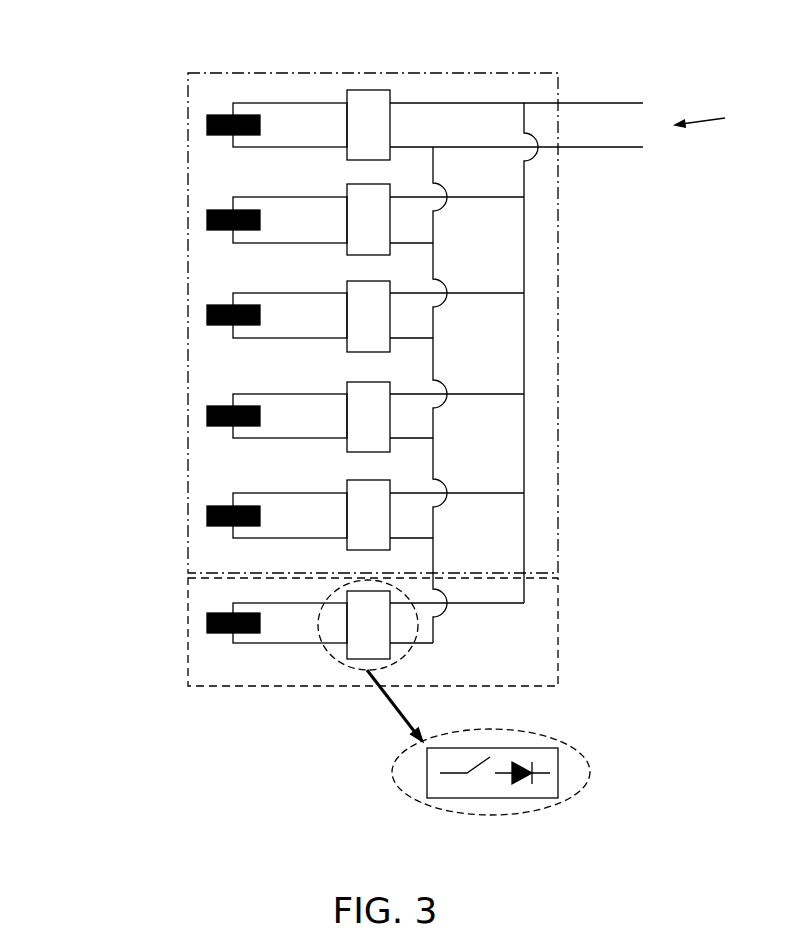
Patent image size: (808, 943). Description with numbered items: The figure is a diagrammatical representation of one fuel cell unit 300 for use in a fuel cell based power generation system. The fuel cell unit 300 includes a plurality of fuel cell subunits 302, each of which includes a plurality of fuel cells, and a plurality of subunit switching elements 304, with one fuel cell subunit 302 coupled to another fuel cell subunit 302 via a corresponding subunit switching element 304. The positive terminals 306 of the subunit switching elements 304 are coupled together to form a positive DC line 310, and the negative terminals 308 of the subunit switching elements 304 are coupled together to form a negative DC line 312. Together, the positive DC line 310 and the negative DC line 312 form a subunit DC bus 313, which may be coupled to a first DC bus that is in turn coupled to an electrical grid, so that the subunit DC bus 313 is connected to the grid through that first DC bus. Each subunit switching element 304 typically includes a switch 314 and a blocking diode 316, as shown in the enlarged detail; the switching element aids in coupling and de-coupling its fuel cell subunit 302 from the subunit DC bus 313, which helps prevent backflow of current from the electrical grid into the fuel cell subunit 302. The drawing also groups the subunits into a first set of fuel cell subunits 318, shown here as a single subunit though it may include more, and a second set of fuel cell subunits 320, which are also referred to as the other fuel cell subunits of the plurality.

The fuel cell unit 300 is at (126, 50).
The fuel cell subunit 302 is at (222, 232).
The subunit switching element 304 is at (380, 90).
The positive terminal 306 is at (483, 103).
The negative terminal 308 is at (491, 488).
The positive DC line 310 is at (615, 103).
The negative DC line 312 is at (605, 149).
The subunit DC bus 313 is at (726, 119).
The switch 314 is at (478, 772).
The blocking diode 316 is at (520, 780).
The first set of fuel cell subunits 318 is at (558, 625).
The second set of fuel cell subunits 320 is at (558, 422).